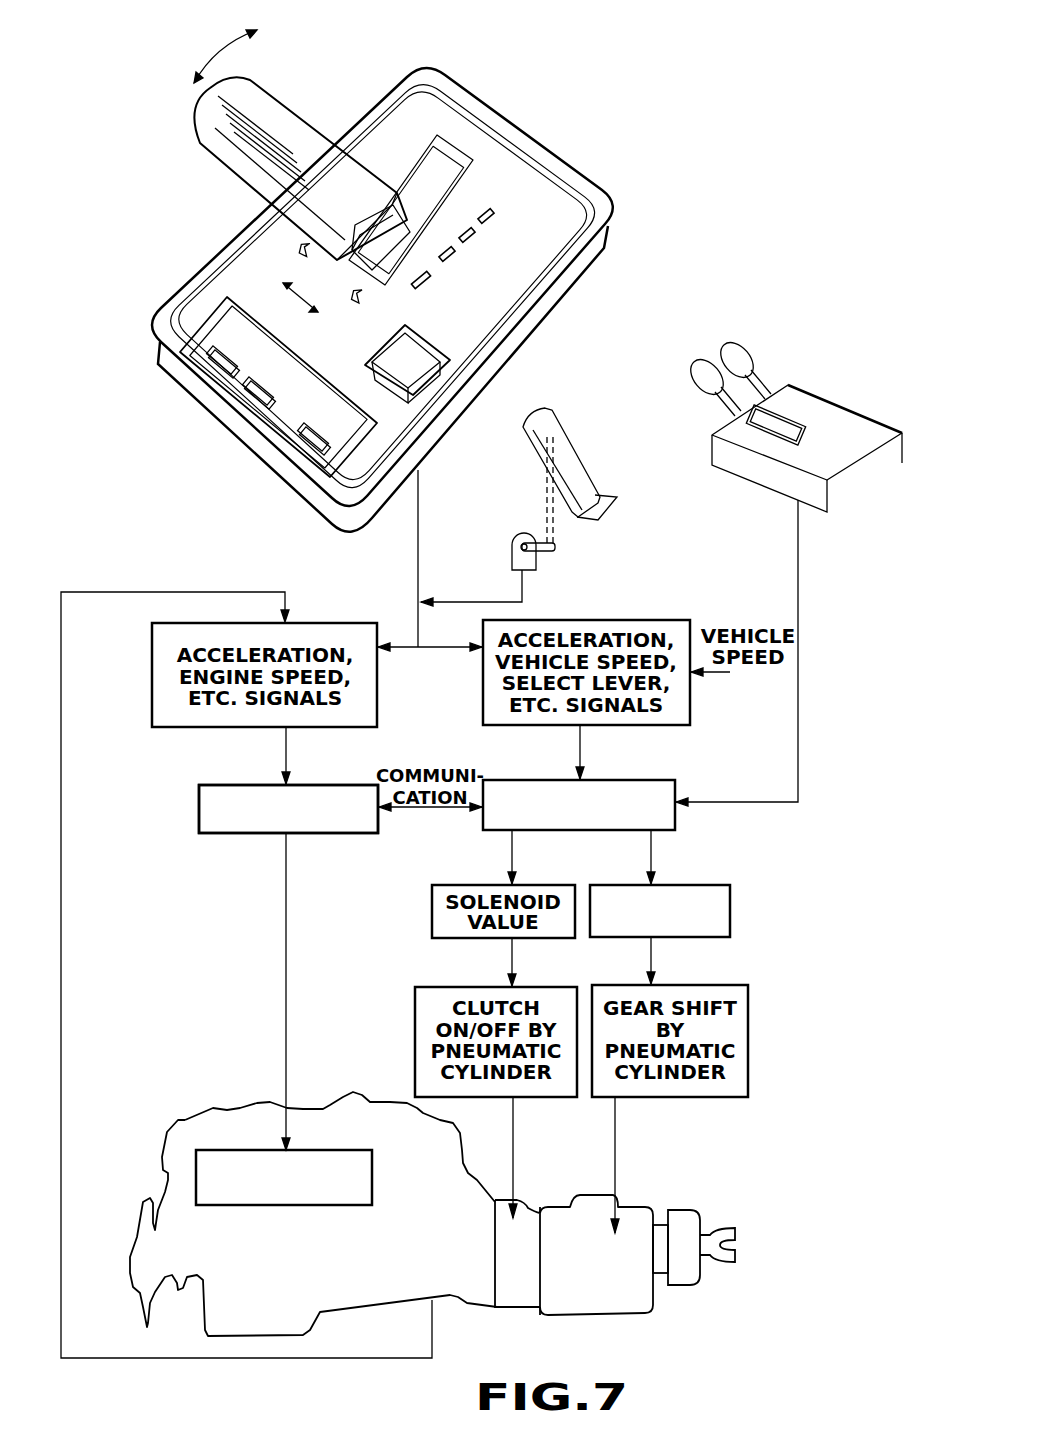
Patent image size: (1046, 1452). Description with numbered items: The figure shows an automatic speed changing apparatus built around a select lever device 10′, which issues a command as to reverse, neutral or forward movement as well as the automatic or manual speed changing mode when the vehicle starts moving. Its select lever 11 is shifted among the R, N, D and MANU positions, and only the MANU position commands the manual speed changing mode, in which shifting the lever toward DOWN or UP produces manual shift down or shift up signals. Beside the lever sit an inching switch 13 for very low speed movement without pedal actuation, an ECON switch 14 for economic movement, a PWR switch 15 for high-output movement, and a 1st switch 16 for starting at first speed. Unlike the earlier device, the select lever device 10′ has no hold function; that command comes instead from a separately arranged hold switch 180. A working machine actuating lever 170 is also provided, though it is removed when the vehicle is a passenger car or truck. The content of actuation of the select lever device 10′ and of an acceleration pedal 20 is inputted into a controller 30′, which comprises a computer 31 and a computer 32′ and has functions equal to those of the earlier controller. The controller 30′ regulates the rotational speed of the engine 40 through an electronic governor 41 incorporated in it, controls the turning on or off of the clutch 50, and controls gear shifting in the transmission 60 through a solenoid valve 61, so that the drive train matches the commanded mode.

The select lever device 10′ is at (560, 118).
The select lever 11 is at (207, 122).
The inching switch 13 is at (410, 377).
The ECON switch 14 is at (210, 348).
The PWR switch 15 is at (246, 381).
The 1st switch 16 is at (300, 436).
The acceleration pedal 20 is at (575, 460).
The working machine actuating lever 170 is at (731, 342).
The hold switch 180 is at (800, 400).
The controller 30′ is at (197, 818).
The computer 31 is at (365, 785).
The computer 32′ is at (652, 780).
The solenoid valve 61 is at (703, 885).
The engine 40 is at (187, 1165).
The electronic governor 41 is at (260, 1152).
The clutch 50 is at (527, 1220).
The transmission 60 is at (635, 1217).